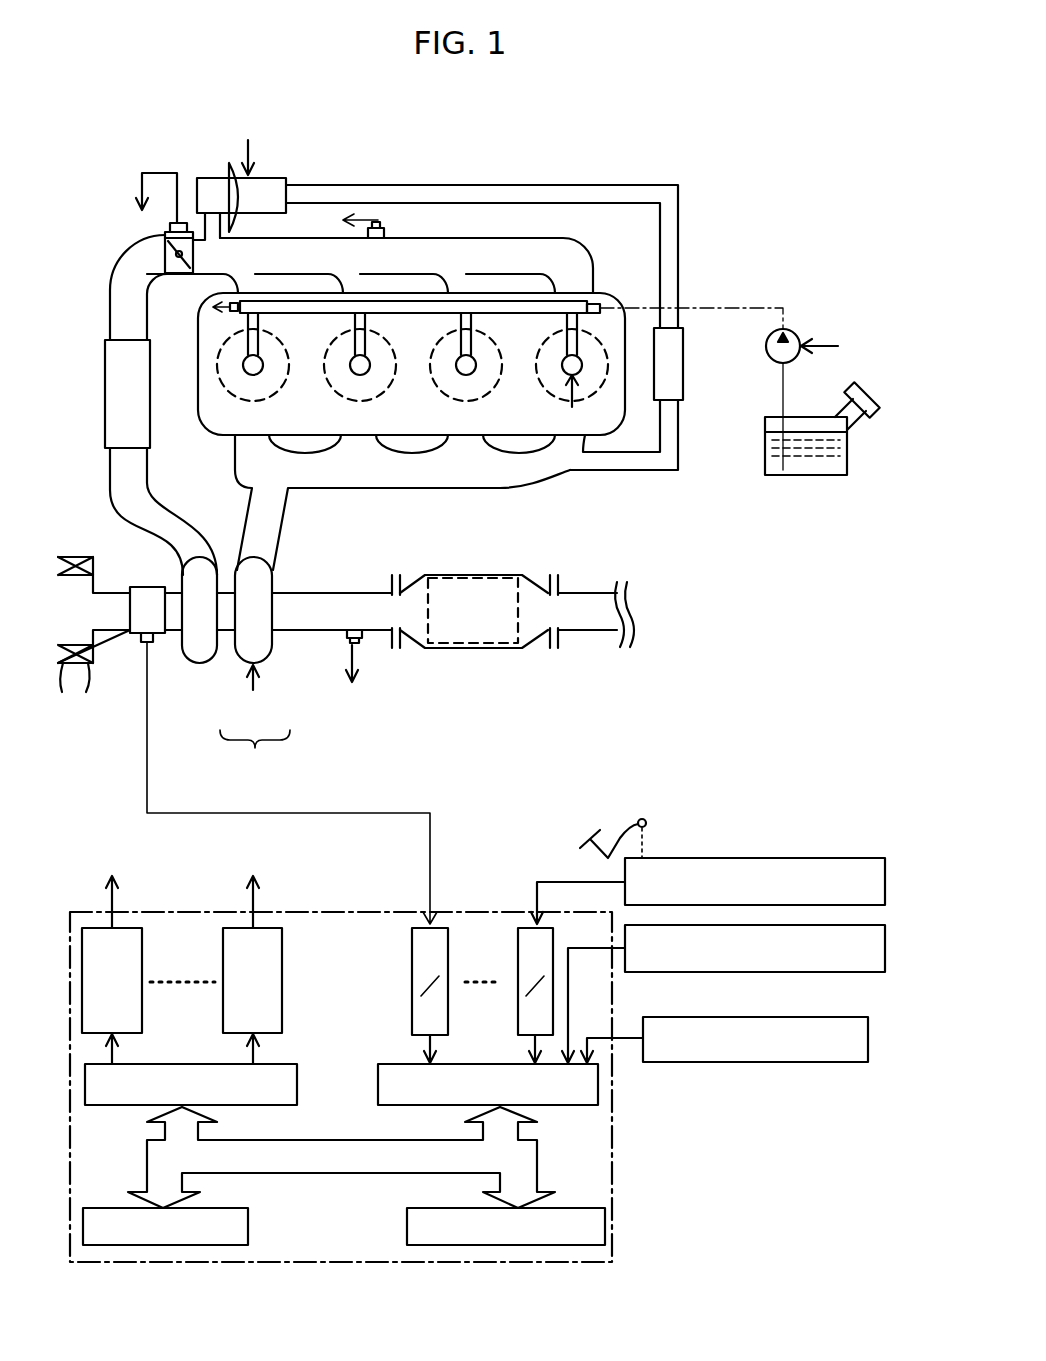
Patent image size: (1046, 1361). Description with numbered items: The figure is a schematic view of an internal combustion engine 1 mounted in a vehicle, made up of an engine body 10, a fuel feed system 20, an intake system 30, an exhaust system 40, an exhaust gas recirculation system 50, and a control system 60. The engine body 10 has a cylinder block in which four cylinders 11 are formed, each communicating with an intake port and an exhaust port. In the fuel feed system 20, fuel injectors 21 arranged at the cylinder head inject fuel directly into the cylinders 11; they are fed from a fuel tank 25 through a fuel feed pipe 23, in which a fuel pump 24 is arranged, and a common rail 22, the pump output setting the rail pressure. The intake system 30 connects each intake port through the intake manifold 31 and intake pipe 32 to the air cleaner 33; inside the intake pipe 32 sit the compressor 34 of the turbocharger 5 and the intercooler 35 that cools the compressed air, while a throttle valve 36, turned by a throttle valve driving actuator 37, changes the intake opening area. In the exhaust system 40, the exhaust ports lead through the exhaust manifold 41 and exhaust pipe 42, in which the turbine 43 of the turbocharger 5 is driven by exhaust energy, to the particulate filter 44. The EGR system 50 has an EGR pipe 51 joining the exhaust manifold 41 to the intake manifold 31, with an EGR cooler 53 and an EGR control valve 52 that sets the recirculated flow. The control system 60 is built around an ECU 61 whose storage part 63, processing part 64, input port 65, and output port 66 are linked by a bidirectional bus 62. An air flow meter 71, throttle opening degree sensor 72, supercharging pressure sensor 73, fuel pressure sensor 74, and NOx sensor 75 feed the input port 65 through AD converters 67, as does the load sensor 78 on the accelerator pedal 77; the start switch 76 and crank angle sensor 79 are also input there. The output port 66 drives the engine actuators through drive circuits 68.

The internal combustion engine 1 is at (810, 136).
The turbocharger 5 is at (255, 752).
The engine body 10 is at (617, 292).
The cylinder 11 is at (598, 393).
The fuel feed system 20 is at (750, 282).
The fuel injector 21 is at (562, 366).
The common rail 22 is at (570, 298).
The fuel feed pipe 23 is at (703, 306).
The fuel pump 24 is at (795, 330).
The fuel tank 25 is at (802, 476).
The intake system 30 is at (63, 290).
The intake manifold 31 is at (470, 238).
The intake pipe 32 is at (115, 488).
The air cleaner 33 is at (95, 668).
The compressor 34 is at (203, 662).
The intercooler 35 is at (105, 360).
The throttle valve 36 is at (193, 230).
The throttle valve driving actuator 37 is at (165, 240).
The exhaust system 40 is at (525, 515).
The exhaust manifold 41 is at (392, 490).
The exhaust pipe 42 is at (592, 632).
The turbine 43 is at (262, 662).
The particulate filter 44 is at (440, 648).
The exhaust gas recirculation system 50 is at (695, 210).
The EGR pipe 51 is at (415, 185).
The EGR control valve 52 is at (270, 178).
The EGR cooler 53 is at (684, 365).
The control system 60 is at (710, 1143).
The electronic control unit 61 is at (298, 910).
The bidirectional bus 62 is at (540, 1165).
The storage part 63 is at (175, 1245).
The processing part 64 is at (505, 1245).
The input port 65 is at (385, 1064).
The output port 66 is at (287, 1064).
The AD converter 67 is at (518, 948).
The drive circuit 68 is at (223, 942).
The air flow meter 71 is at (147, 587).
The throttle opening degree sensor 72 is at (178, 223).
The supercharging pressure sensor 73 is at (378, 227).
The fuel pressure sensor 74 is at (225, 307).
The NOx sensor 75 is at (365, 640).
The start switch 76 is at (820, 1062).
The accelerator pedal 77 is at (620, 826).
The load sensor 78 is at (815, 858).
The crank angle sensor 79 is at (810, 972).